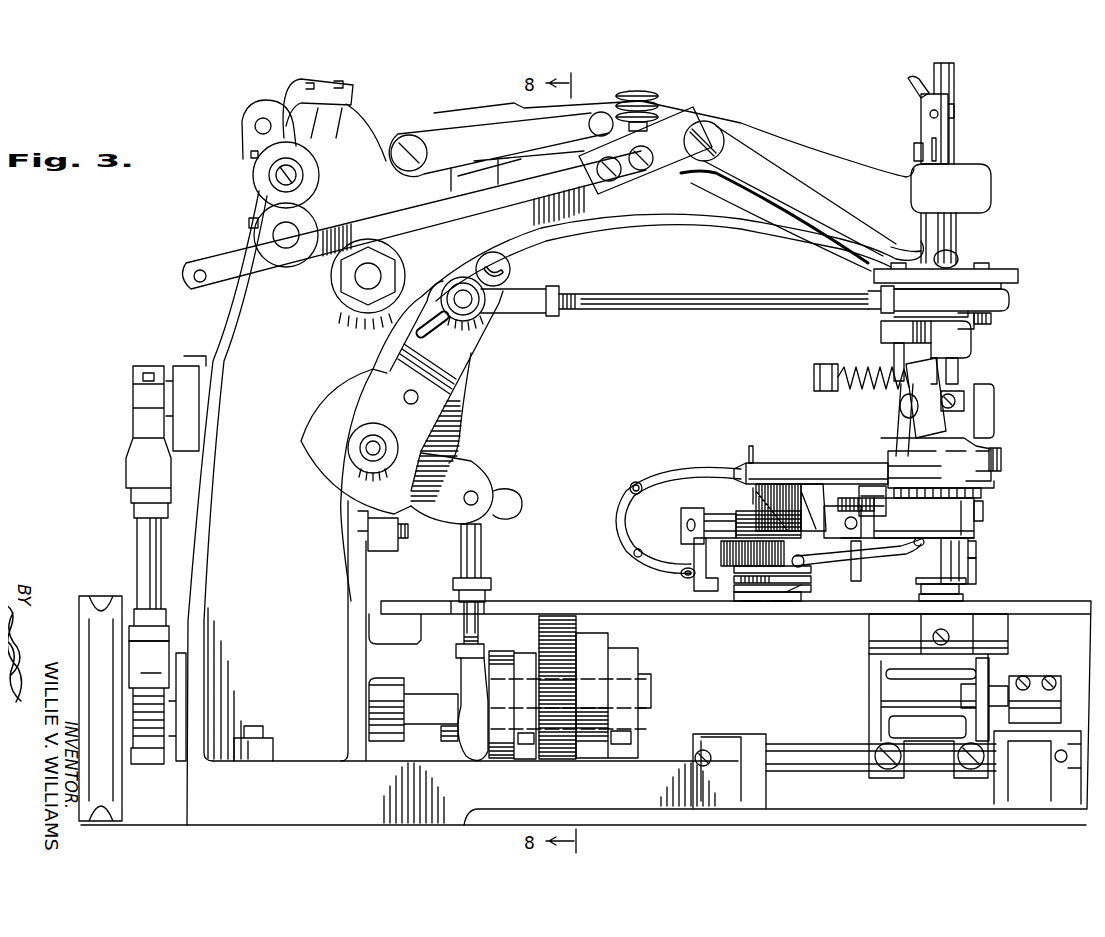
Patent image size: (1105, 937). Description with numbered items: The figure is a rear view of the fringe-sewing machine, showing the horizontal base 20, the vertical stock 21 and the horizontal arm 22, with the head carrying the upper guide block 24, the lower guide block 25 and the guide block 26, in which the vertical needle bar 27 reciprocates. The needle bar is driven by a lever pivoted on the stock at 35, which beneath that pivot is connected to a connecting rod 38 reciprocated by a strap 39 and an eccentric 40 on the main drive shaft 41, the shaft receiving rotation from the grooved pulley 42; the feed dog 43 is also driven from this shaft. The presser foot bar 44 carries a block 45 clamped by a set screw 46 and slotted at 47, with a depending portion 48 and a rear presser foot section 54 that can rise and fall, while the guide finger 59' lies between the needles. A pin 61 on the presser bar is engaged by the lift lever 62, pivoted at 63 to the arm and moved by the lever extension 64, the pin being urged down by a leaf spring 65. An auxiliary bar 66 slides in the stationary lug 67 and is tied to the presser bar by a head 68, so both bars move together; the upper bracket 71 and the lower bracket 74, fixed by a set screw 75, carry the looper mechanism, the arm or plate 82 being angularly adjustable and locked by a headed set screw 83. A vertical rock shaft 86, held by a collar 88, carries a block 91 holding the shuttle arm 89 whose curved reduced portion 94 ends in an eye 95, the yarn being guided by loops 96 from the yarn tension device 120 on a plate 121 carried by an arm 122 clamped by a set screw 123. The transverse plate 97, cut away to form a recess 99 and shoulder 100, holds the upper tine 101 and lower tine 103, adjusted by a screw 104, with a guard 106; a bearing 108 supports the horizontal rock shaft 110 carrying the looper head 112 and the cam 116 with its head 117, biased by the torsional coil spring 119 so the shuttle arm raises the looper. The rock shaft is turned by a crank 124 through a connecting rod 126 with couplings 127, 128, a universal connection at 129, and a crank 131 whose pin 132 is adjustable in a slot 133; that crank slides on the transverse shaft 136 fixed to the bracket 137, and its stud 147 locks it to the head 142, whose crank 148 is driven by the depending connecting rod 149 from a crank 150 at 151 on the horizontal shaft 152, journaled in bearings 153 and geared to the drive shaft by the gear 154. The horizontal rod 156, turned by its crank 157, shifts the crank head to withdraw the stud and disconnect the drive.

The horizontal base 20 is at (1050, 612).
The vertical stock 21 is at (224, 338).
The horizontal arm 22 is at (804, 152).
The upper guide block 24 is at (992, 190).
The lower guide block 25 is at (995, 486).
The guide block 26 is at (988, 425).
The needle bar 27 is at (955, 93).
The pivot 35 is at (385, 272).
The connecting rod 38 is at (138, 560).
The strap 39 is at (149, 702).
The eccentric 40 is at (182, 676).
The main horizontal drive shaft 41 is at (430, 700).
The grooved pulley 42 is at (98, 600).
The feed dog 43 is at (960, 598).
The presser foot bar 44 is at (958, 232).
The block 45 is at (975, 591).
The set screw 46 is at (977, 570).
The slot 47 is at (938, 568).
The depending portion 48 is at (968, 605).
The rear section 54 is at (918, 590).
The guide finger 59' is at (1022, 568).
The pin 61 is at (950, 260).
The lift lever 62 is at (840, 210).
The pivot 63 is at (708, 126).
The lever extension 64 is at (378, 218).
The leaf spring 65 is at (902, 246).
The auxiliary reciprocatory vertical bar 66 is at (960, 372).
The stationary lug 67 is at (973, 344).
The head 68 is at (966, 396).
The upper horizontal bracket 71 is at (977, 333).
The lower horizontal bracket 74 is at (924, 518).
The set screw 75 is at (985, 523).
The horizontal arm or plate 82 is at (975, 538).
The headed set screw 83 is at (983, 495).
The vertical rock shaft 86 is at (892, 355).
The collar 88 is at (890, 332).
The shuttle arm 89 is at (786, 470).
The block 91 is at (883, 460).
The curved reduced portion 94 is at (690, 472).
The eye 95 is at (687, 580).
The guide eyes or loops 96 is at (640, 483).
The horizontal transverse plate 97 is at (720, 552).
The horizontal recess 99 is at (812, 580).
The shoulder 100 is at (735, 602).
The upper horizontal tine 101 is at (753, 602).
The lower horizontal tine 103 is at (782, 592).
The screw 104 is at (790, 600).
The guard 106 is at (865, 555).
The horizontal bearing 108 is at (838, 502).
The horizontal rock shaft 110 is at (702, 519).
The head 112 is at (708, 517).
The cam 116 is at (772, 483).
The head 117 is at (806, 498).
The torsional coil spring 119 is at (727, 495).
The yarn tension device 120 is at (877, 402).
The plate 121 is at (1000, 440).
The arm 122 is at (1003, 468).
The set screw 123 is at (1002, 455).
The crank 124 is at (1020, 274).
The connecting rod 126 is at (644, 312).
The coupling 127 is at (1010, 300).
The coupling 128 is at (549, 322).
The universal pivotal connection 129 is at (993, 316).
The crank 131 is at (478, 348).
The pin 132 is at (480, 314).
The slot 133 is at (509, 266).
The transverse horizontal shaft 136 is at (360, 450).
The bracket 137 is at (390, 552).
The head 142 is at (462, 412).
The stud or tooth 147 is at (418, 398).
The crank 148 is at (474, 478).
The depending connecting rod 149 is at (483, 603).
The crank 150 is at (500, 652).
The universal pivotal connection 151 is at (445, 748).
The horizontal shaft 152 is at (652, 690).
The bearings 153 is at (525, 748).
The gear 154 is at (555, 762).
The horizontal rod 156 is at (478, 494).
The crank 157 is at (518, 500).